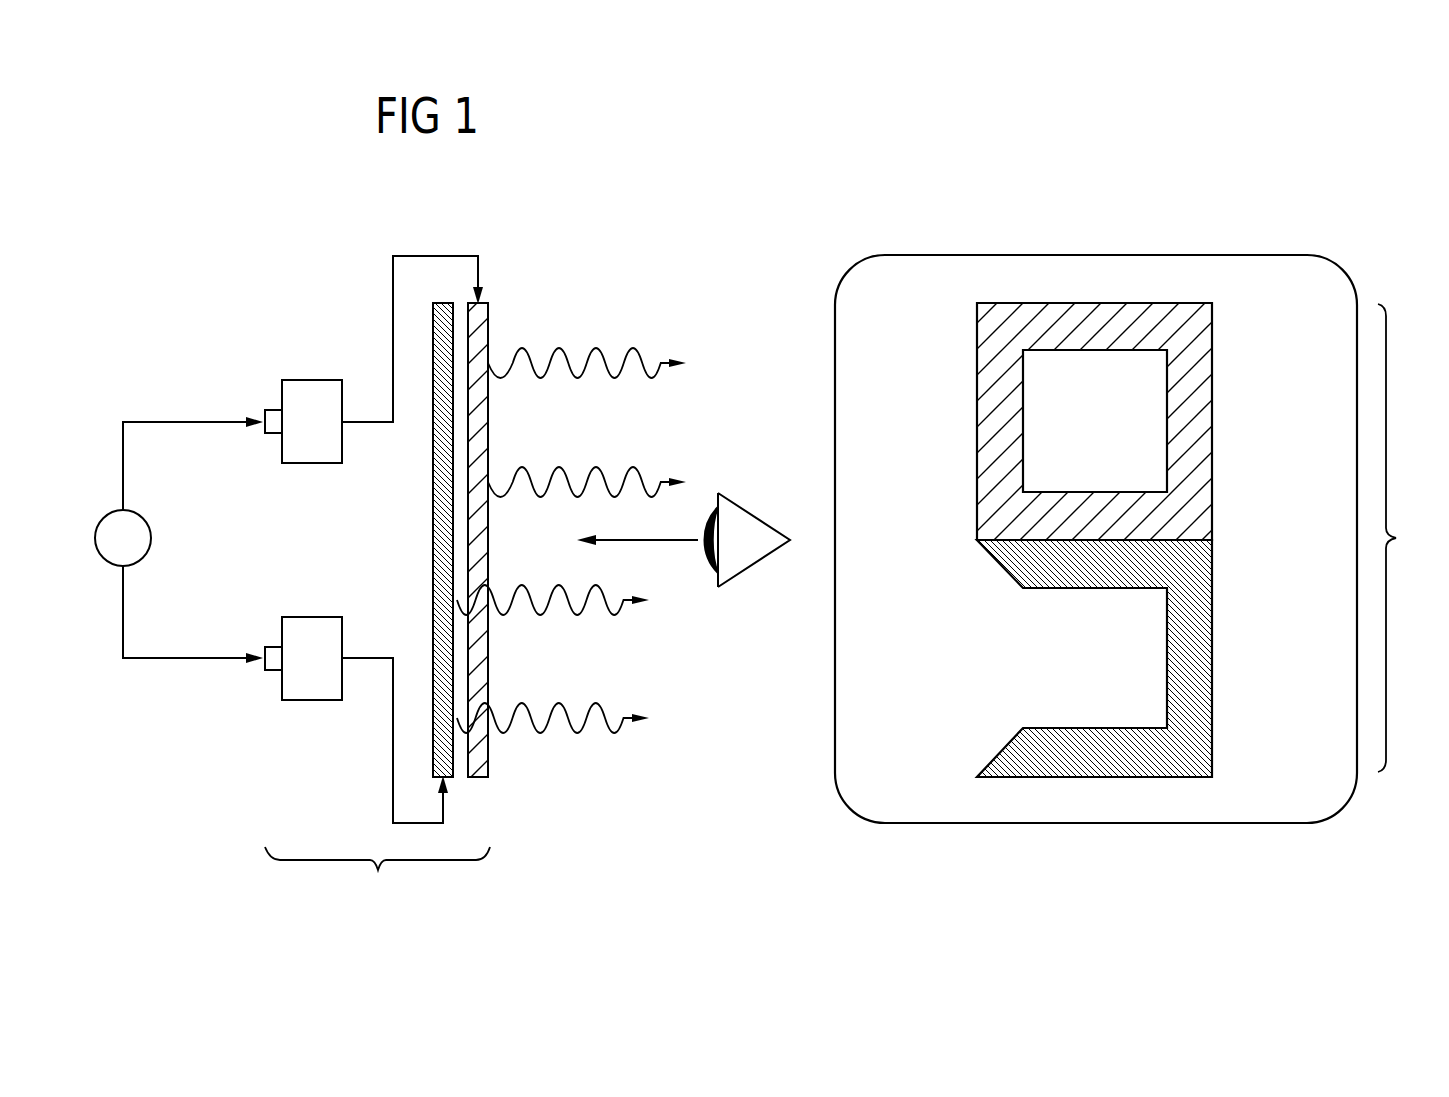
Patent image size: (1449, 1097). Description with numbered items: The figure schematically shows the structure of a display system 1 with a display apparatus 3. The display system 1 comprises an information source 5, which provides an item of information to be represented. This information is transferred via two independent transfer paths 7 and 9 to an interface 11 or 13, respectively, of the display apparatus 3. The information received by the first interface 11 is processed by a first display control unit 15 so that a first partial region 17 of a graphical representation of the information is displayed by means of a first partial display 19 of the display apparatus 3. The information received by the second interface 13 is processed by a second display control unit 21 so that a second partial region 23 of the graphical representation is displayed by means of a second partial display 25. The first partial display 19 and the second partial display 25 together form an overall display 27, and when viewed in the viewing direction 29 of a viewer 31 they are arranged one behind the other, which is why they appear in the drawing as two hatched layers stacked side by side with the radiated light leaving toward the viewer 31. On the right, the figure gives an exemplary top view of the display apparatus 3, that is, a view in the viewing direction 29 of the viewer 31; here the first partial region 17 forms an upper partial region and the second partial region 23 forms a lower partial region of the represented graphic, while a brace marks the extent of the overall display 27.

The display system 1 is at (596, 278).
The display apparatus 3 is at (1425, 196).
The information source 5 is at (151, 540).
The transfer path 7 is at (177, 420).
The transfer path 9 is at (177, 660).
The interface 11 is at (272, 408).
The interface 13 is at (273, 672).
The first display control unit 15 is at (313, 378).
The first partial region 17 is at (1000, 425).
The first partial display 19 is at (489, 337).
The second display control unit 21 is at (313, 702).
The second partial region 23 is at (1185, 666).
The second partial display 25 is at (432, 541).
The overall display 27 is at (1408, 538).
The viewing direction 29 is at (624, 540).
The viewer 31 is at (761, 517).